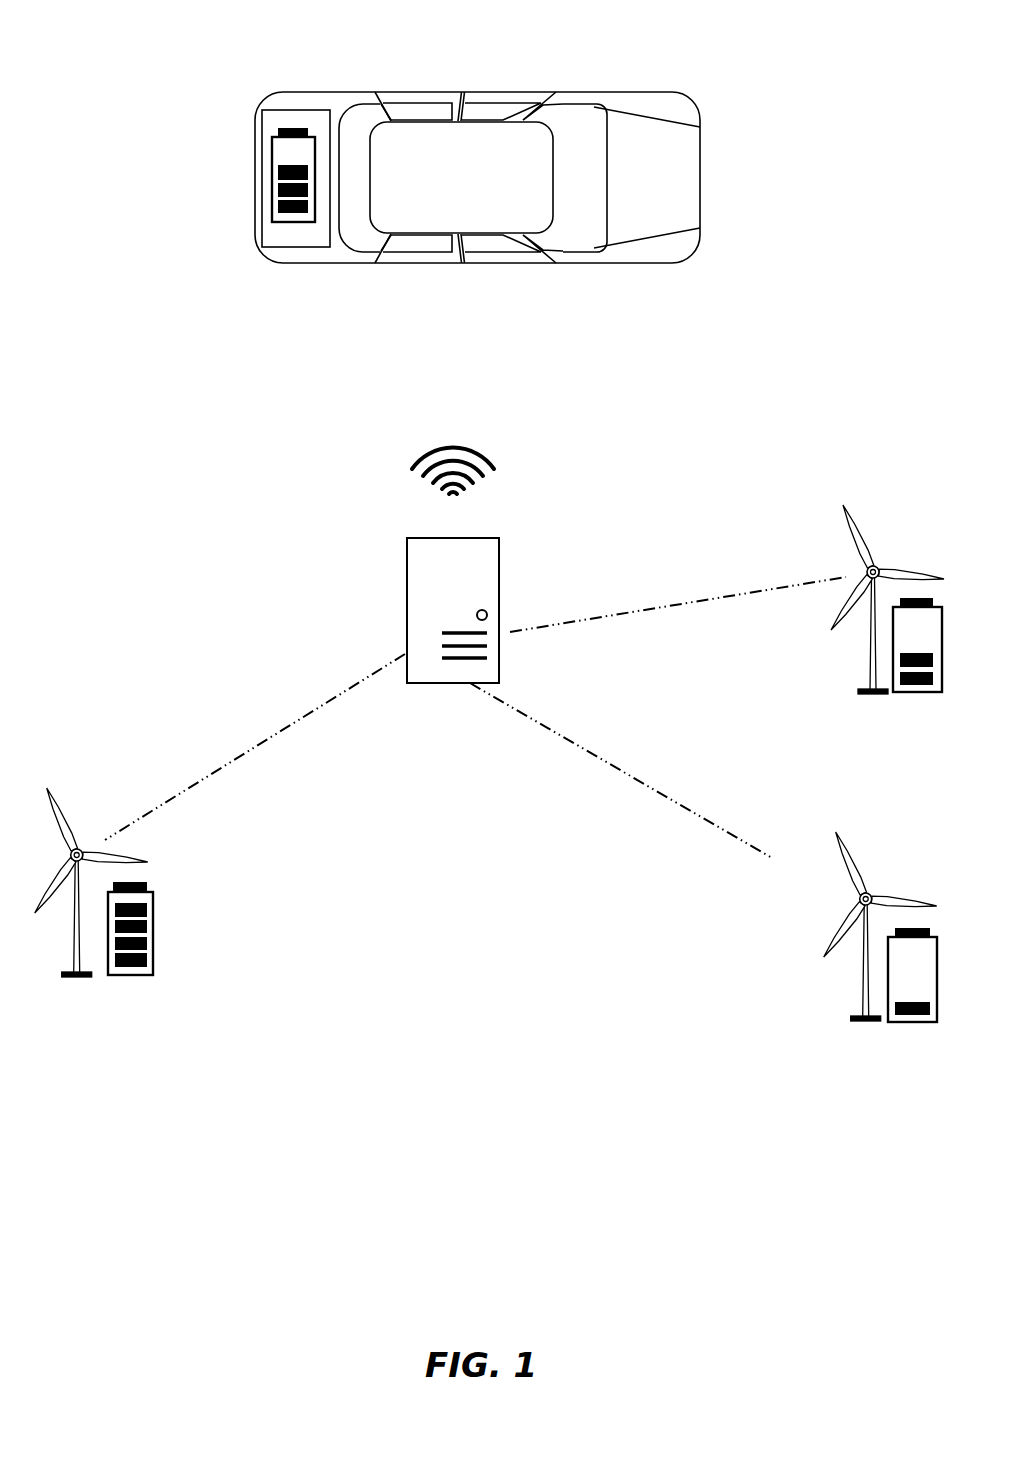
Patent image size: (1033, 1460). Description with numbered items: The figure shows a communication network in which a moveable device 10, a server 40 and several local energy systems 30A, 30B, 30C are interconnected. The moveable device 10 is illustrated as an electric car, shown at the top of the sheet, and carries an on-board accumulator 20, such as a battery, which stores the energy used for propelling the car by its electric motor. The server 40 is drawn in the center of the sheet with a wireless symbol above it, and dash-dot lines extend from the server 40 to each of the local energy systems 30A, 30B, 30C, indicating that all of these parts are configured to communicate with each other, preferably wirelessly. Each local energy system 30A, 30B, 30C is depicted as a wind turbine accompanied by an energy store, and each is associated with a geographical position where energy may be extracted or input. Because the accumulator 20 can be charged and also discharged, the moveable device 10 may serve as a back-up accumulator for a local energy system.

The moveable device 10 is at (258, 84).
The accumulator 20 is at (275, 187).
The server 40 is at (425, 594).
The local energy system 30A is at (92, 974).
The local energy system 30B is at (850, 1018).
The local energy system 30C is at (858, 691).